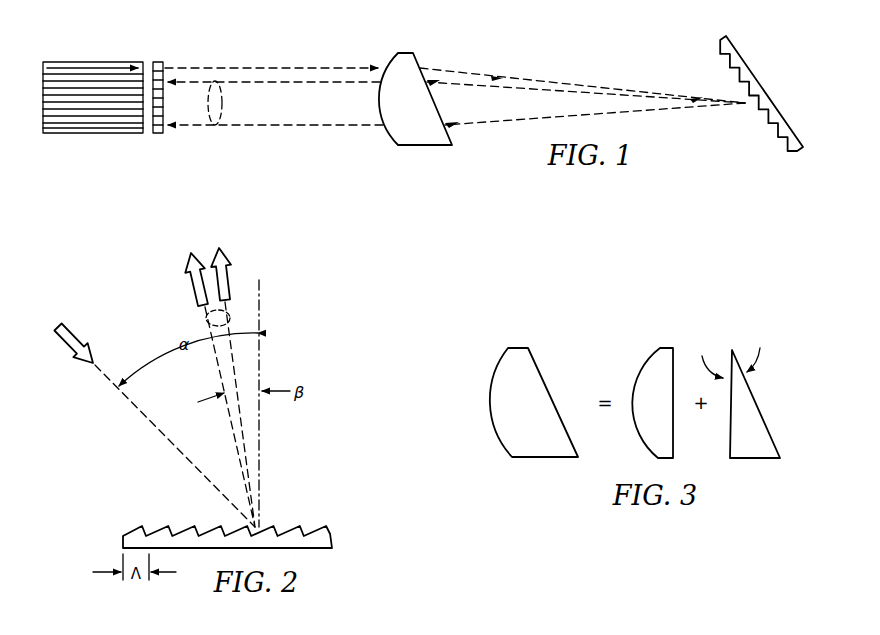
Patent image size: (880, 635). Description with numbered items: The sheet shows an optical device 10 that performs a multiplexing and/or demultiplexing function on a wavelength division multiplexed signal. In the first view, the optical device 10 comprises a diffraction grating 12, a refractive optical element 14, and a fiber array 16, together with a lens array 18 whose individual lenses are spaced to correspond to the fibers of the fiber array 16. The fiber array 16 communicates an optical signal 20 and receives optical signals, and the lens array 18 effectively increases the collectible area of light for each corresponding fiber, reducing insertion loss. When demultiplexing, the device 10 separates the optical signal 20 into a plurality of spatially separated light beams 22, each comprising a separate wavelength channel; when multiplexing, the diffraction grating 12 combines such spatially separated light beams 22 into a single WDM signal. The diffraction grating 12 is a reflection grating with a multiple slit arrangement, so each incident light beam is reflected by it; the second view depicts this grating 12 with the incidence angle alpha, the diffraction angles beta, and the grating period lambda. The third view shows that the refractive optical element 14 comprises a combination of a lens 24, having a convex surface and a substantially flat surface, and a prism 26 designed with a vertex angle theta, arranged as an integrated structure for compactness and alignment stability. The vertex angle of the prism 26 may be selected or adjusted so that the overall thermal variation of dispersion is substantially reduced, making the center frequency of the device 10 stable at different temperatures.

In FIG. 1, the optical device 10 is at (630, 40).
In FIG. 1, the diffraction grating 12 is at (766, 96).
In FIG. 2, the diffraction grating 12 is at (333, 545).
In FIG. 1, the refractive optical element 14 is at (426, 146).
In FIG. 3, the refractive optical element 14 is at (489, 392).
In FIG. 1, the fiber array 16 is at (96, 133).
In FIG. 1, the lens array 18 is at (157, 61).
In FIG. 2, the lens array 18 is at (141, 414).
In FIG. 1, the optical signal 20 is at (90, 66).
In FIG. 1, the spatially separated light beams 22 is at (213, 128).
In FIG. 2, the spatially separated light beams 22 is at (205, 321).
In FIG. 3, the lens 24 is at (636, 378).
In FIG. 3, the prism 26 is at (756, 401).